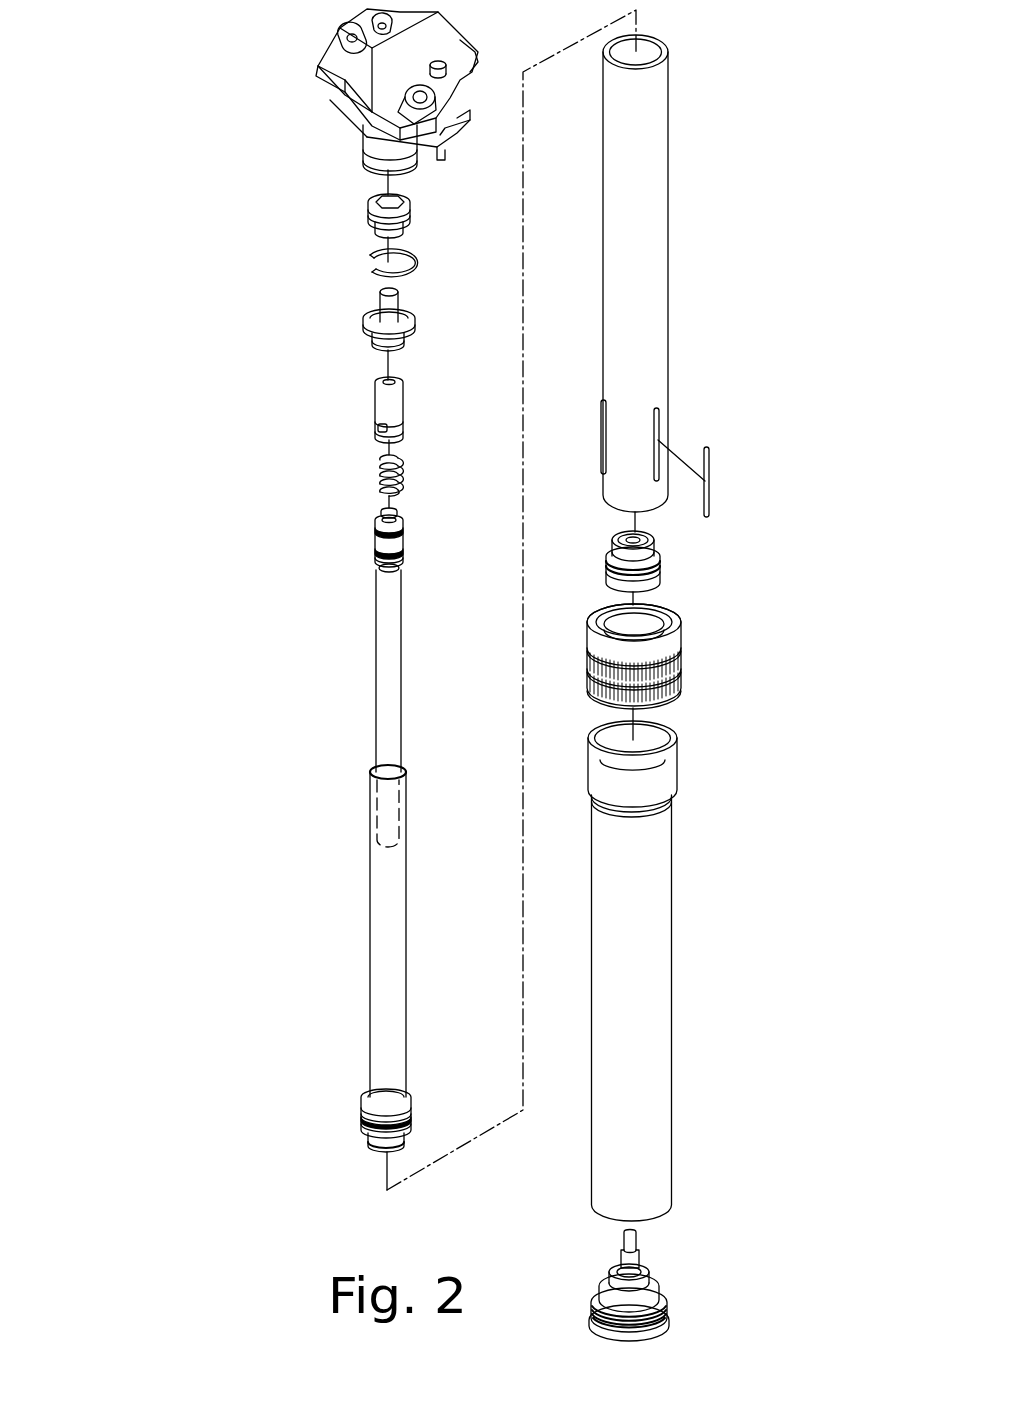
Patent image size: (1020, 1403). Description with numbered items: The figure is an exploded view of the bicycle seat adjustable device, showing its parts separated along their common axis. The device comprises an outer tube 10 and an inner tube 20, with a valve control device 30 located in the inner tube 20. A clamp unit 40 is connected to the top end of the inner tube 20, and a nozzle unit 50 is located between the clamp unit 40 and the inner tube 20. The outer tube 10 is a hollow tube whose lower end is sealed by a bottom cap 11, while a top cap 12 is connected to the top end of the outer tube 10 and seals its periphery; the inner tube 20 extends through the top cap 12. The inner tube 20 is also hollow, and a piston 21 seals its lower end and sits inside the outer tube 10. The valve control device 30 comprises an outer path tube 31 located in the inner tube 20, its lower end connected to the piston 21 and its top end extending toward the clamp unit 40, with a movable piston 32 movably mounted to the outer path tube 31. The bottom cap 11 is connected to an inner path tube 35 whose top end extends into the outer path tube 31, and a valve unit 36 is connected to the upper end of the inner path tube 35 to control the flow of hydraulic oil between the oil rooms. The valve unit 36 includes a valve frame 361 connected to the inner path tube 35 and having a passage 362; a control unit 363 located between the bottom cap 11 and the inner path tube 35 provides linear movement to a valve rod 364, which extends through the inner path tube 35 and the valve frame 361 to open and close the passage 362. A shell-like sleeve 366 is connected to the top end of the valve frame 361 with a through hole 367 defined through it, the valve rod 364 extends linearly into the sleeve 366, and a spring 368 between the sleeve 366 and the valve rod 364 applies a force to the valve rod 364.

The outer tube 10 is at (757, 974).
The bottom cap 11 is at (662, 1290).
The top cap 12 is at (680, 625).
The inner tube 20 is at (705, 239).
The piston 21 is at (664, 575).
The valve control device 30 is at (196, 569).
The outer path tube 31 is at (376, 935).
The movable piston 32 is at (362, 1104).
The inner path tube 35 is at (385, 641).
The valve unit 36 is at (292, 380).
The valve frame 361 is at (377, 545).
The passage 362 is at (384, 570).
The control unit 363 is at (606, 1243).
The valve rod 364 is at (380, 512).
The sleeve 366 is at (375, 387).
The through hole 367 is at (377, 430).
The spring 368 is at (378, 472).
The clamp unit 40 is at (298, 86).
The nozzle unit 50 is at (350, 315).